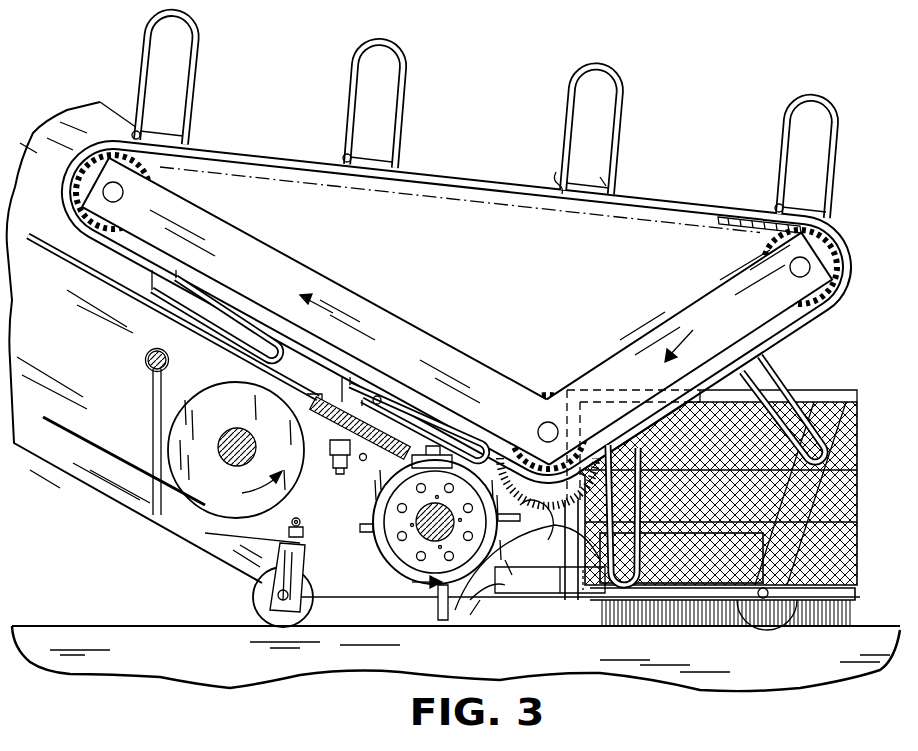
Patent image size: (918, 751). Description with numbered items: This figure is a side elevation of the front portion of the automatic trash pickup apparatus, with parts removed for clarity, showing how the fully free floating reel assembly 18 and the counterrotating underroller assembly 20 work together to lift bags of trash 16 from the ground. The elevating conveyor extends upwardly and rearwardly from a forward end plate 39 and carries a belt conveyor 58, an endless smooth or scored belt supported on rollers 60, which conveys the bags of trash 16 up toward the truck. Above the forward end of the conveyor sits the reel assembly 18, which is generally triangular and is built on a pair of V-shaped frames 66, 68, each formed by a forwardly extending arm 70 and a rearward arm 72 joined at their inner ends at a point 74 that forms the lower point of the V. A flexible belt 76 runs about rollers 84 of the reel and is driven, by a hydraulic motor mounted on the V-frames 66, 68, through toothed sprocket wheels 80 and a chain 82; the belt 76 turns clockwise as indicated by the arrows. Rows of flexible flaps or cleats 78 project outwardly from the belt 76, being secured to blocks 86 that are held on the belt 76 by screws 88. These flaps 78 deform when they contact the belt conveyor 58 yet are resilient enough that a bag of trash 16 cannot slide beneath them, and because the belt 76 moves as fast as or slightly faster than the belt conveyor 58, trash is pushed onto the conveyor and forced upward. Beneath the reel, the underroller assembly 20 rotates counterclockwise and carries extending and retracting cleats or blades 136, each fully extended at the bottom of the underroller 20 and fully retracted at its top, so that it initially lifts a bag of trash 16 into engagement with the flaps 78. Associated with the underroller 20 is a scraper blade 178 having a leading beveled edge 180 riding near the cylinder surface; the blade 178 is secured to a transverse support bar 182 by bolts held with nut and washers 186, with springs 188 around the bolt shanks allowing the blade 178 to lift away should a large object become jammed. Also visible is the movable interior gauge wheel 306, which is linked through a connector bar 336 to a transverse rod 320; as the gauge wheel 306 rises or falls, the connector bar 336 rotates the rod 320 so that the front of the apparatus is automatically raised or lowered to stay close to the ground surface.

The bags of trash 16 is at (537, 628).
The fully free floating reel assembly 18 is at (509, 73).
The counterrotating underroller assembly 20 is at (375, 569).
The forward end plate 39 is at (63, 115).
The belt conveyor 58 is at (40, 245).
The rollers 60 is at (220, 403).
The V-shaped frame 66 is at (456, 323).
The V-shaped frame 68 is at (456, 323).
The forwardly extending arm 70 is at (672, 328).
The rearward arm 72 is at (285, 258).
The point 74 is at (548, 457).
The flexible belt 76 is at (432, 175).
The flexible flaps or cleats 78 is at (152, 33).
The toothed sprocket wheels 80 is at (140, 165).
The chain 82 is at (723, 220).
The rollers 84 is at (517, 442).
The blocks 86 is at (163, 292).
The screws 88 is at (563, 182).
The extending and retracting cleats or blades 136 is at (510, 515).
The scraper blade 178 is at (392, 455).
The leading beveled edge 180 is at (430, 452).
The transverse support bar 182 is at (353, 413).
The nut and washers 186 is at (343, 478).
The springs 188 is at (363, 461).
The movable interior gauge wheel 306 is at (265, 597).
The transverse rod 320 is at (147, 358).
The connector bar 336 is at (155, 415).